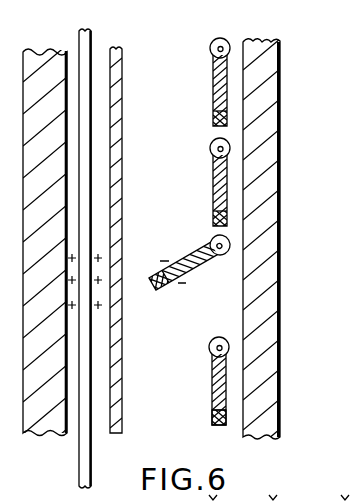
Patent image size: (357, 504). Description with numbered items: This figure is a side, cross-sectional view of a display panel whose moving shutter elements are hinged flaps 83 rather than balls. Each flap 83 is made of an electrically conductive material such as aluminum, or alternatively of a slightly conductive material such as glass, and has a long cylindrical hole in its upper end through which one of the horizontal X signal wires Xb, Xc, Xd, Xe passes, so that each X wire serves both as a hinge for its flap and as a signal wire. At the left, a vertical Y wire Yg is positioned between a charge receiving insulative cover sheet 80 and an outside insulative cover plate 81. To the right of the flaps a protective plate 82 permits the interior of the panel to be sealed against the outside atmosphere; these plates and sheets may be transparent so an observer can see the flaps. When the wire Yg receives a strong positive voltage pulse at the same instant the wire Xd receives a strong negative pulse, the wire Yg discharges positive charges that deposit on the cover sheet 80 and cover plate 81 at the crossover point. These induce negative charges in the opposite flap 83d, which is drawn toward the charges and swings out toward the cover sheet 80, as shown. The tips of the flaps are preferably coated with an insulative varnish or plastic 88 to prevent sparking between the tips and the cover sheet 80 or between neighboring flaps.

The charge receiving insulative cover sheet 80 is at (123, 57).
The outside insulative cover plate 81 is at (35, 50).
The protective plate 82 is at (281, 137).
The hinged flap 83 is at (214, 70).
The flap on wire Xd 83d is at (193, 271).
The insulative varnish or plastic tip coating 88 is at (213, 415).
The Y signal wire Yg is at (93, 34).
The X signal wire Xb is at (210, 51).
The X signal wire Xc is at (210, 150).
The X signal wire Xd is at (211, 242).
The X signal wire Xe is at (209, 346).